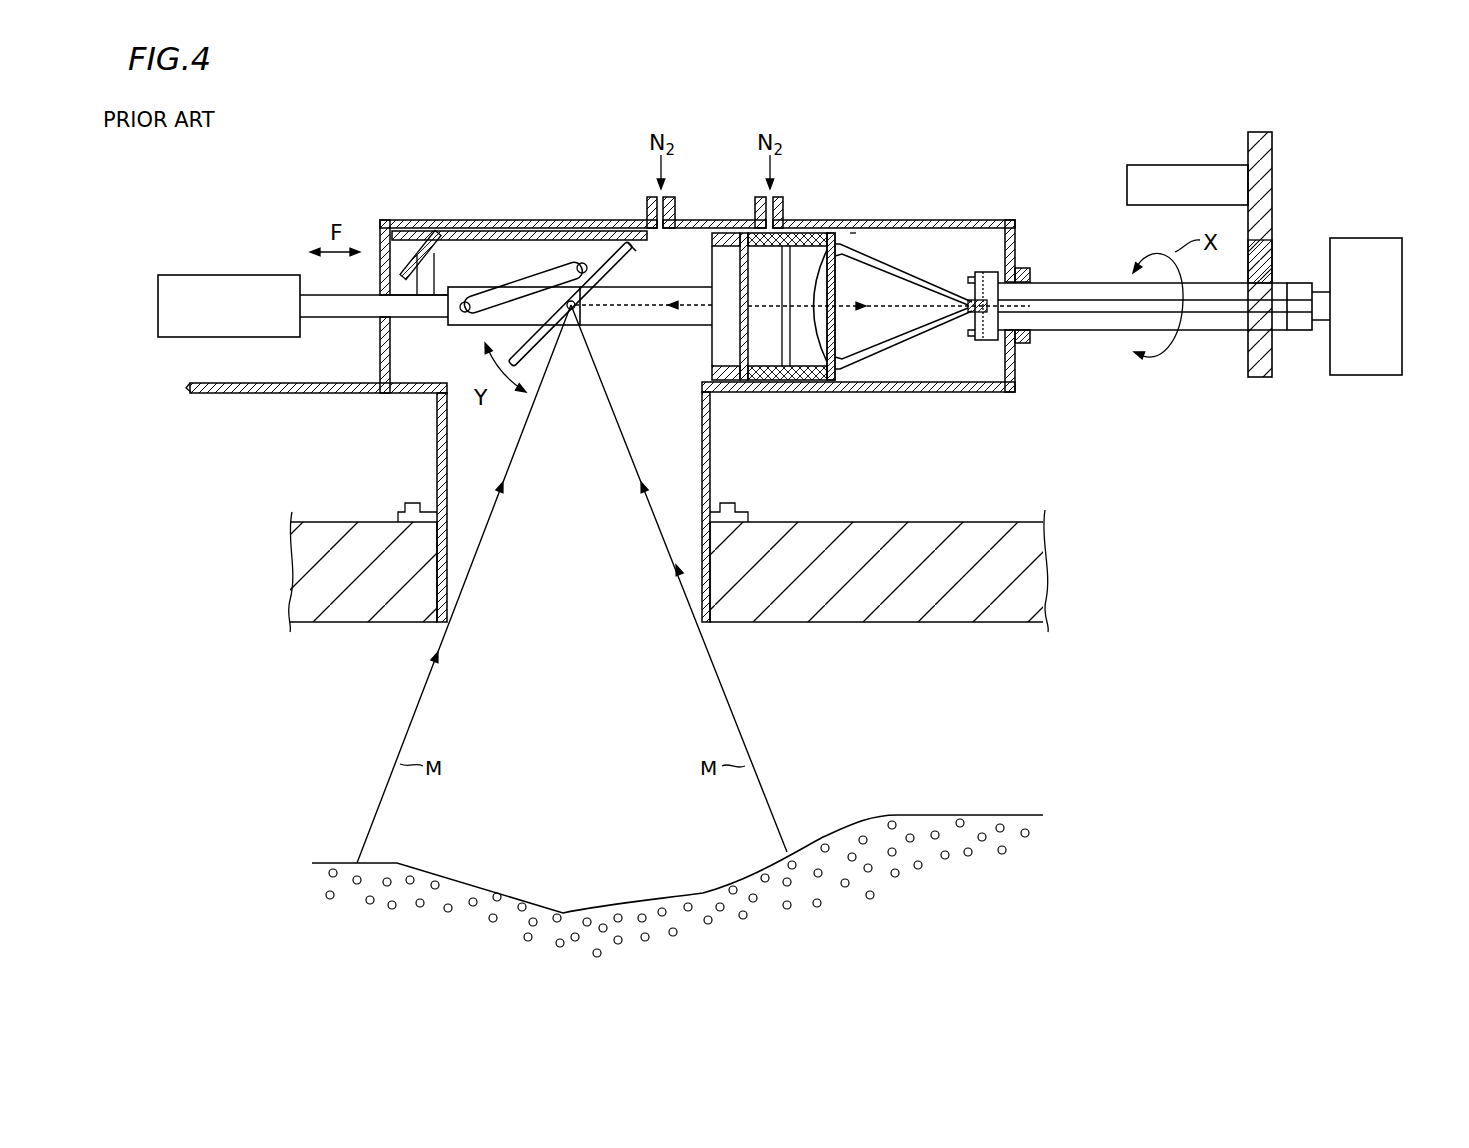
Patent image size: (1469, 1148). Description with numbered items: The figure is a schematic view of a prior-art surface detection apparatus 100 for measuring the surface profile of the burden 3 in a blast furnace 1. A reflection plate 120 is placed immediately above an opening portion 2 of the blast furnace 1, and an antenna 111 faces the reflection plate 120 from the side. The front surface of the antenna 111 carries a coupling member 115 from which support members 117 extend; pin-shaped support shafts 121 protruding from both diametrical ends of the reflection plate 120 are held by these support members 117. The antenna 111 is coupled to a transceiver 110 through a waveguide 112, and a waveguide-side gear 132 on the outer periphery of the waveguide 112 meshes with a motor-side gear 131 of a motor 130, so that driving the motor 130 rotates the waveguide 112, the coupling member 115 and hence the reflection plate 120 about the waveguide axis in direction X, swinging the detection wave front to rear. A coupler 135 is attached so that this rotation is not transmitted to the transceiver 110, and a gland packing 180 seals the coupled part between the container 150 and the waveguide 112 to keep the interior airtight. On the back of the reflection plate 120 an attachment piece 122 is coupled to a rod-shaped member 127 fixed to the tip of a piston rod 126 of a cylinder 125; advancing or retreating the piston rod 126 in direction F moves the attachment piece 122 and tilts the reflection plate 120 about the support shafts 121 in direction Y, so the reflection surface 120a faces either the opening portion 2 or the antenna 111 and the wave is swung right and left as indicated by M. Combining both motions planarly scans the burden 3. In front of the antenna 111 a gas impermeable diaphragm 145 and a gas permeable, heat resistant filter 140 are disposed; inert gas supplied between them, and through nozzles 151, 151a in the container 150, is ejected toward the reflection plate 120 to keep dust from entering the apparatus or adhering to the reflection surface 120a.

The surface detection apparatus 100 is at (1052, 142).
The transceiver 110 is at (1403, 270).
The antenna 111 is at (907, 263).
The waveguide 112 is at (1072, 283).
The coupling member 115 is at (855, 232).
The support members 117 is at (613, 284).
The reflection plate 120 is at (598, 226).
The reflection surface 120a is at (633, 250).
The support shafts 121 is at (585, 300).
The attachment piece 122 is at (575, 254).
The cylinder 125 is at (233, 275).
The piston rod 126 is at (341, 319).
The rod-shaped member 127 is at (487, 333).
The motor 130 is at (1191, 165).
The motor-side gear 131 is at (1273, 176).
The waveguide-side gear 132 is at (1273, 250).
The coupler 135 is at (1300, 334).
The filter 140 is at (740, 348).
The diaphragm 145 is at (802, 345).
The container 150 is at (484, 220).
The gas nozzle 151 is at (786, 202).
The gas nozzle 151a is at (648, 213).
The gland packing 180 is at (1030, 338).
The blast furnace 1 is at (976, 540).
The opening portion 2 is at (692, 585).
The burden 3 is at (835, 830).